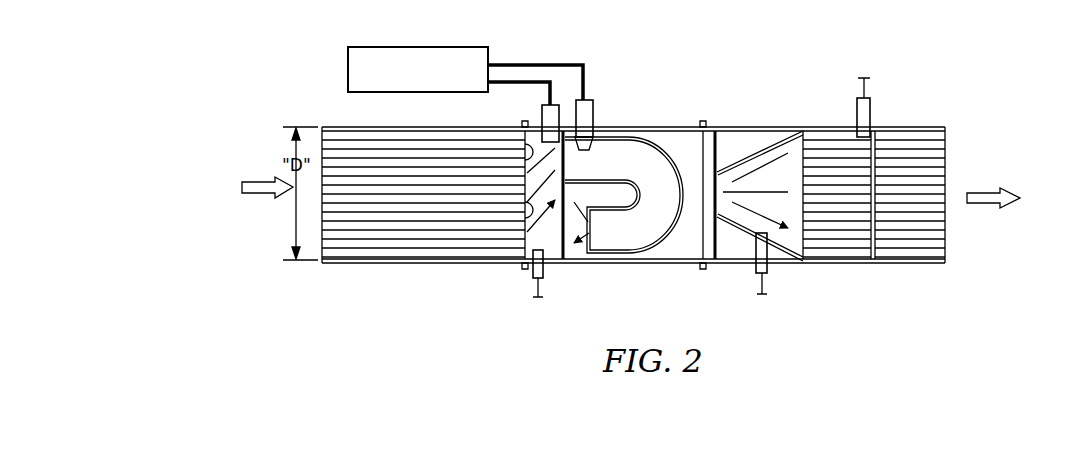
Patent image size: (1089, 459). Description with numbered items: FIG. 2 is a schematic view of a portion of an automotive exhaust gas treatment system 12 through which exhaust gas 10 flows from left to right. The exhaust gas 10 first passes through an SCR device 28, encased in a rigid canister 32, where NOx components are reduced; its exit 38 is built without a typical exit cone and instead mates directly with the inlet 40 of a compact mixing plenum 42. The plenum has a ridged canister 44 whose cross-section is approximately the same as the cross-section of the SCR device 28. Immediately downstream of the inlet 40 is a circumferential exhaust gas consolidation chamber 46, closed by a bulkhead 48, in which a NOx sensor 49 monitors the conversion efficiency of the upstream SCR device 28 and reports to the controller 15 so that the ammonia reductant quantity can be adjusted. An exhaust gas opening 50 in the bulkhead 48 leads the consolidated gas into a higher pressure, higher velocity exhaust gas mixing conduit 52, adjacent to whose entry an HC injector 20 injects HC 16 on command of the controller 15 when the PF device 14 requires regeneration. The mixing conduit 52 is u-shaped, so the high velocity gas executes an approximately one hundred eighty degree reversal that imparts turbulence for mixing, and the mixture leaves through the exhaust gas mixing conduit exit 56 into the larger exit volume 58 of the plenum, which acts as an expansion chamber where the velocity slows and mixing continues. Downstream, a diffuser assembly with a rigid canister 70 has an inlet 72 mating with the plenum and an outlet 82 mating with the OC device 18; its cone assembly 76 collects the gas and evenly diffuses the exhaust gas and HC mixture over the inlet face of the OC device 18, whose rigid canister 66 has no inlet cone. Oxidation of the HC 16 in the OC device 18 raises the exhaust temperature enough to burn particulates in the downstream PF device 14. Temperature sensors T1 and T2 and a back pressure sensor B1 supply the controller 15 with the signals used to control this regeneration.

The exhaust gas 10 is at (267, 178).
The exhaust gas treatment system 12 is at (948, 106).
The PF device 14 is at (906, 127).
The controller 15 is at (346, 62).
The HC 16 is at (595, 143).
The OC device 18 is at (827, 130).
The HC injector 20 is at (595, 105).
The SCR device 28 is at (362, 124).
The canister 32 is at (393, 263).
The exit 38 is at (527, 150).
The inlet 40 is at (523, 130).
The compact mixing plenum 42 is at (653, 121).
The ridged canister 44 is at (628, 264).
The exhaust gas consolidation chamber 46 is at (527, 235).
The bulkhead 48 is at (560, 245).
The NOx sensor 49 is at (542, 113).
The exhaust gas opening 50 is at (568, 165).
The exhaust gas mixing conduit 52 is at (668, 147).
The exhaust gas mixing conduit exit 56 is at (585, 250).
The exit volume 58 is at (687, 148).
The rigid canister 66 is at (880, 265).
The rigid canister 70 is at (779, 270).
The inlet 72 is at (700, 242).
The cone assembly 76 is at (742, 180).
The outlet 82 is at (809, 235).
The temperature sensor T1 is at (531, 282).
The temperature sensor T2 is at (851, 96).
The back pressure sensor B1 is at (751, 277).